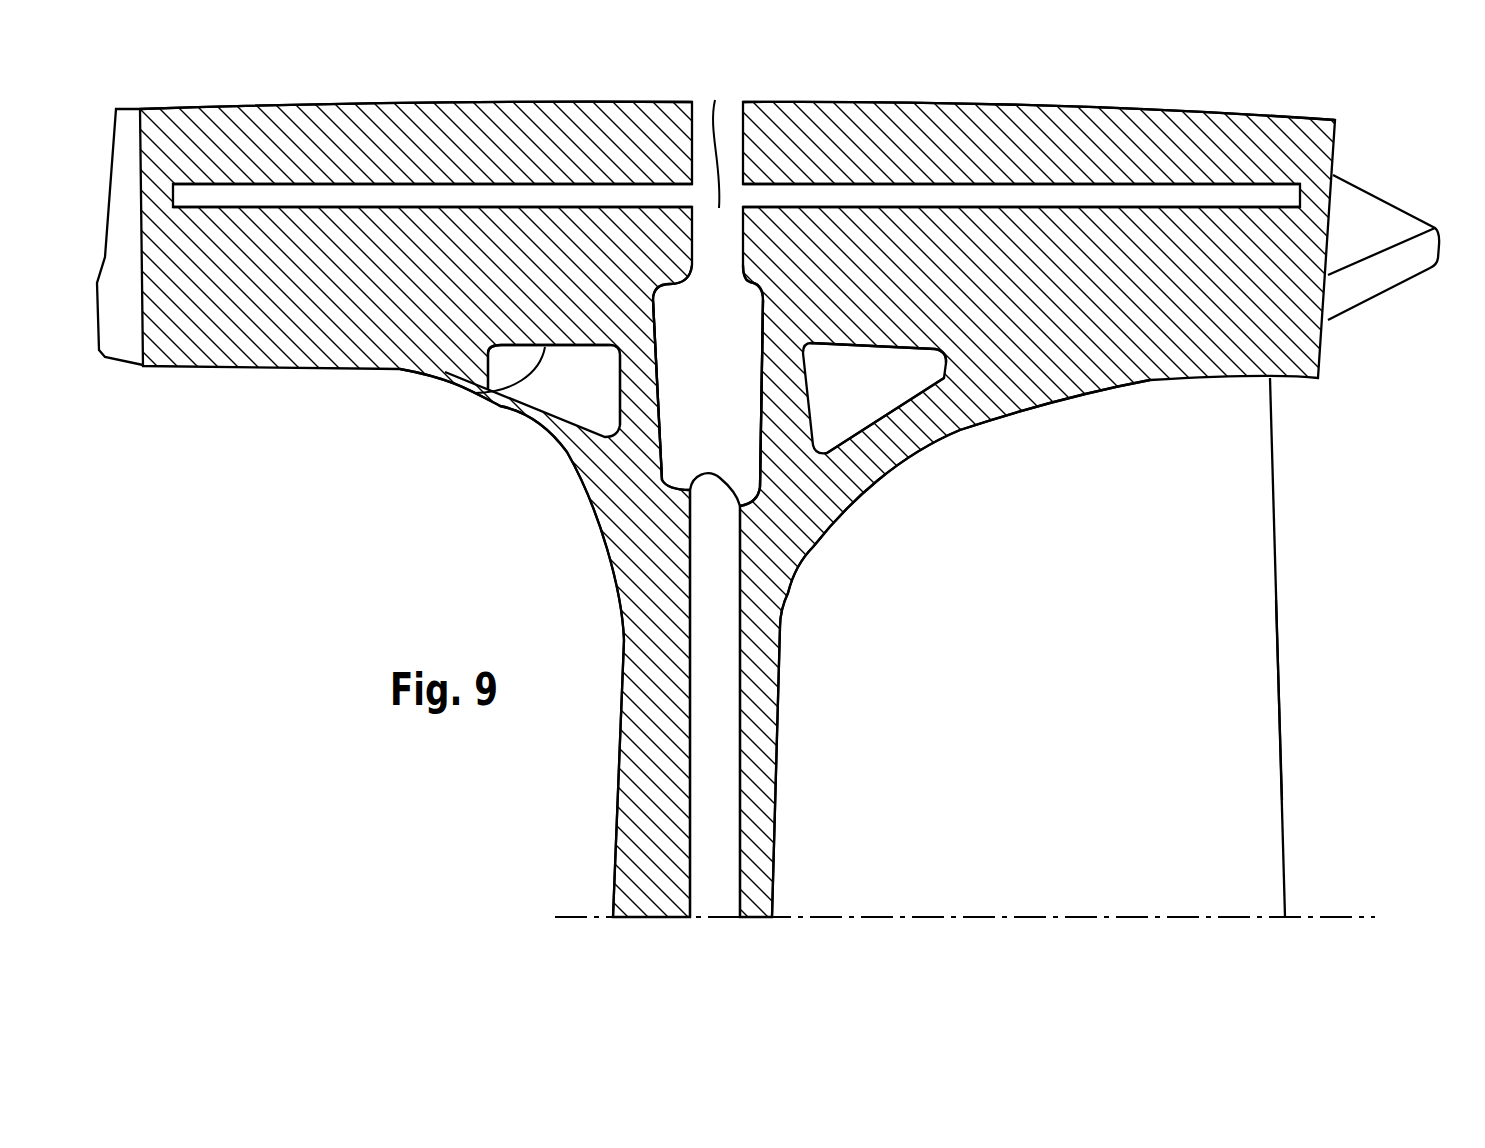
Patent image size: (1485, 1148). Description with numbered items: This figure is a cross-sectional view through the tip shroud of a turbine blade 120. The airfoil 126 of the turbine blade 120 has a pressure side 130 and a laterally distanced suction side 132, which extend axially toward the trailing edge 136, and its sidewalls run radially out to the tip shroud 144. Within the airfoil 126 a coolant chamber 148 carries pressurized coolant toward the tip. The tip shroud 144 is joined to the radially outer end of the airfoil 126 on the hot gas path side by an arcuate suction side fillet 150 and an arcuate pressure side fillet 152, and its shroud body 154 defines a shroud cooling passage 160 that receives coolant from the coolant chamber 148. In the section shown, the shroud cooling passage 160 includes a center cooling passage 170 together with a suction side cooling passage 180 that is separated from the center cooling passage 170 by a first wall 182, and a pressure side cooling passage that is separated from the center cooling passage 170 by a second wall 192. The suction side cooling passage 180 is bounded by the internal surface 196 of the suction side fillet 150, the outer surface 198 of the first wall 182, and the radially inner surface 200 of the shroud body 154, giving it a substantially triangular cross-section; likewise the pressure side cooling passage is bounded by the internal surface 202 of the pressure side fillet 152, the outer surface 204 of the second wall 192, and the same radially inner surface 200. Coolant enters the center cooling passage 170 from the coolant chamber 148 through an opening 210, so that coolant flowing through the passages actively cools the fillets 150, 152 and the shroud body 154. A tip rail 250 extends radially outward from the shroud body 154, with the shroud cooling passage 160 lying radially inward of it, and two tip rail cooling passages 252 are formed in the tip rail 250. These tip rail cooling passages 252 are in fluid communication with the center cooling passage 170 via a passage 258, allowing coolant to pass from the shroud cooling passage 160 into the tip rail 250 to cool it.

The turbine blade 120 is at (1188, 99).
The airfoil 126 is at (1283, 522).
The pressure side 130 is at (1103, 870).
The suction side 132 is at (620, 808).
The trailing edge 136 is at (1280, 598).
The tip shroud 144 is at (1030, 102).
The coolant chamber 148 is at (707, 860).
The suction side fillet 150 is at (587, 450).
The pressure side fillet 152 is at (970, 413).
The shroud body 154 is at (1399, 203).
The shroud cooling passage 160 is at (570, 353).
The center cooling passage 170 is at (727, 407).
The suction side cooling passage 180 is at (517, 357).
The first wall 182 is at (642, 375).
The second wall 192 is at (783, 400).
The internal surface of suction side fillet 196 is at (545, 397).
The outer surface of first wall 198 is at (616, 346).
The radially inner surface of shroud body 200 is at (475, 393).
The internal surface of pressure side fillet 202 is at (885, 417).
The outer surface of second wall 204 is at (807, 413).
The opening 210 is at (710, 492).
The tip rail 250 is at (870, 150).
The tip rail cooling passage 252 is at (427, 200).
The passage 258 is at (715, 100).